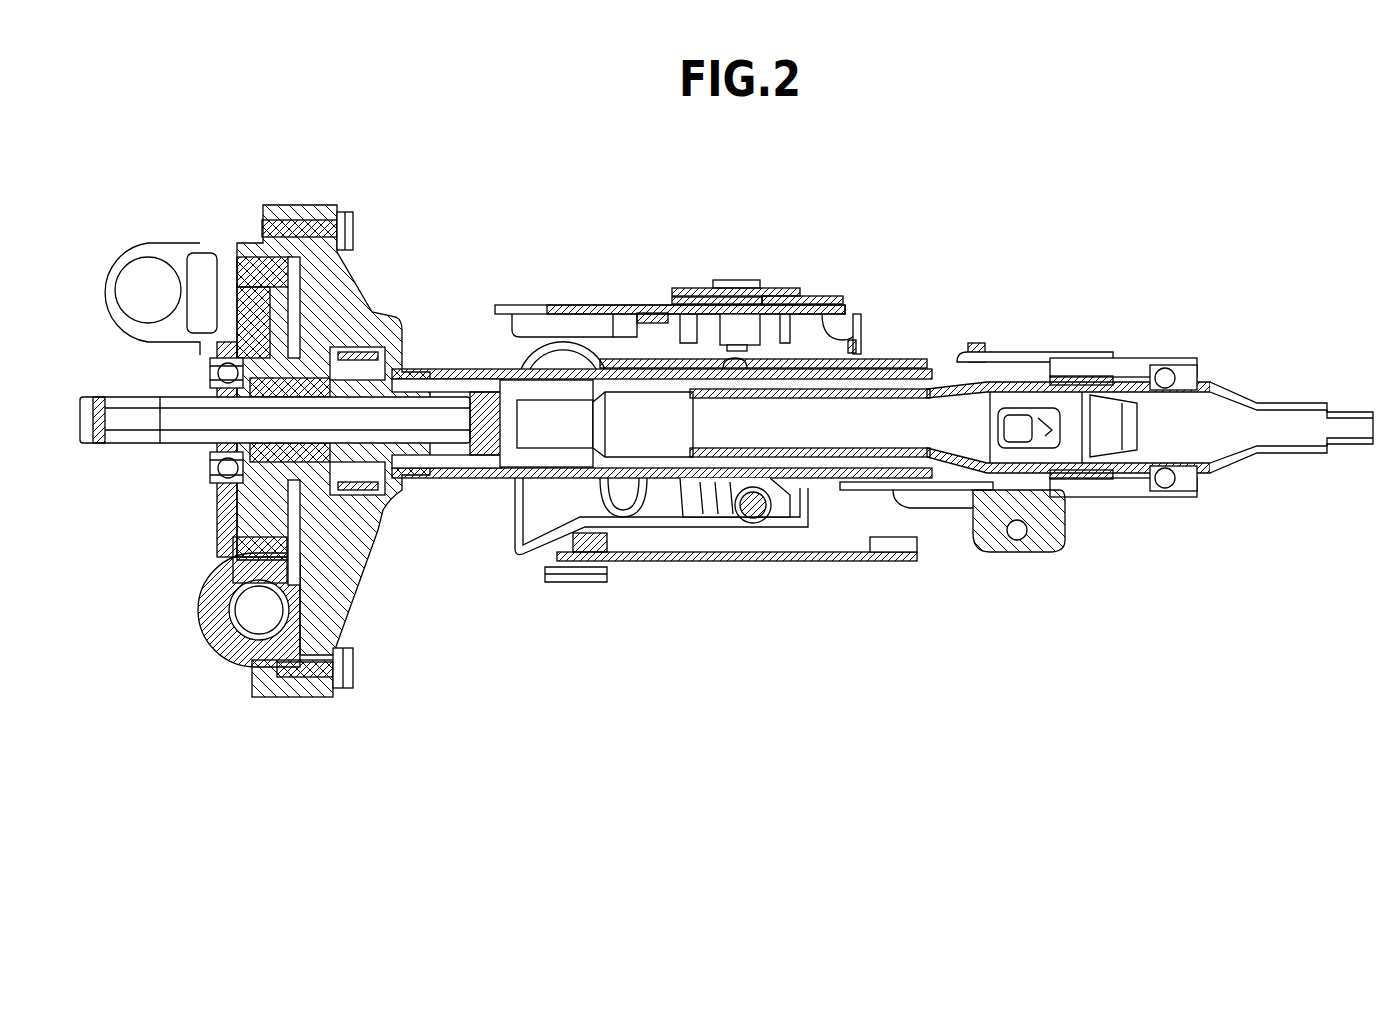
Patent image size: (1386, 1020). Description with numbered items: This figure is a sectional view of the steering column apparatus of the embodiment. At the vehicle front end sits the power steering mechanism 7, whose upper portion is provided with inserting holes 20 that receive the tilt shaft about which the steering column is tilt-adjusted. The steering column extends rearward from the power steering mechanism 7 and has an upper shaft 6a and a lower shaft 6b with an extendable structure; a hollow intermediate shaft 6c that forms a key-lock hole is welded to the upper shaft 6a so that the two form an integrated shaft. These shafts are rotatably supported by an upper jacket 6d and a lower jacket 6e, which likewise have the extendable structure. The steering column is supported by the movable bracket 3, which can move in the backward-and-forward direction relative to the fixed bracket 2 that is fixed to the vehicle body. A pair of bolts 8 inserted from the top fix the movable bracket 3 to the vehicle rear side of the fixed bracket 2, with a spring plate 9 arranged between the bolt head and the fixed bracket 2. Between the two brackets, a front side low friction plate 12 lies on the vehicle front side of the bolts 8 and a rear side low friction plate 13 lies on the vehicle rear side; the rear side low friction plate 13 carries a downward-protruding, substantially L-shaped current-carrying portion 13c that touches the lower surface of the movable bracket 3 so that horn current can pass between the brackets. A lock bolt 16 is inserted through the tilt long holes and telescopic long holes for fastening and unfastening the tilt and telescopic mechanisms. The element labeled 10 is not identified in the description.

The fixed bracket 2 is at (581, 303).
The movable bracket 3 is at (668, 425).
The upper shaft 6a is at (1257, 400).
The lower shaft 6b is at (532, 418).
The intermediate shaft 6c is at (945, 384).
The upper jacket 6d is at (912, 358).
The lower jacket 6e is at (470, 364).
The power steering mechanism 7 is at (230, 637).
The bolt 8 is at (735, 280).
The spring plate 9 is at (782, 288).
The spacer 10 is at (687, 308).
The front side low friction plate 12 is at (661, 470).
The rear side low friction plate 13 is at (825, 295).
The current-carrying portion 13c is at (878, 332).
The lock bolt 16 is at (760, 523).
The inserting holes 20 is at (143, 277).